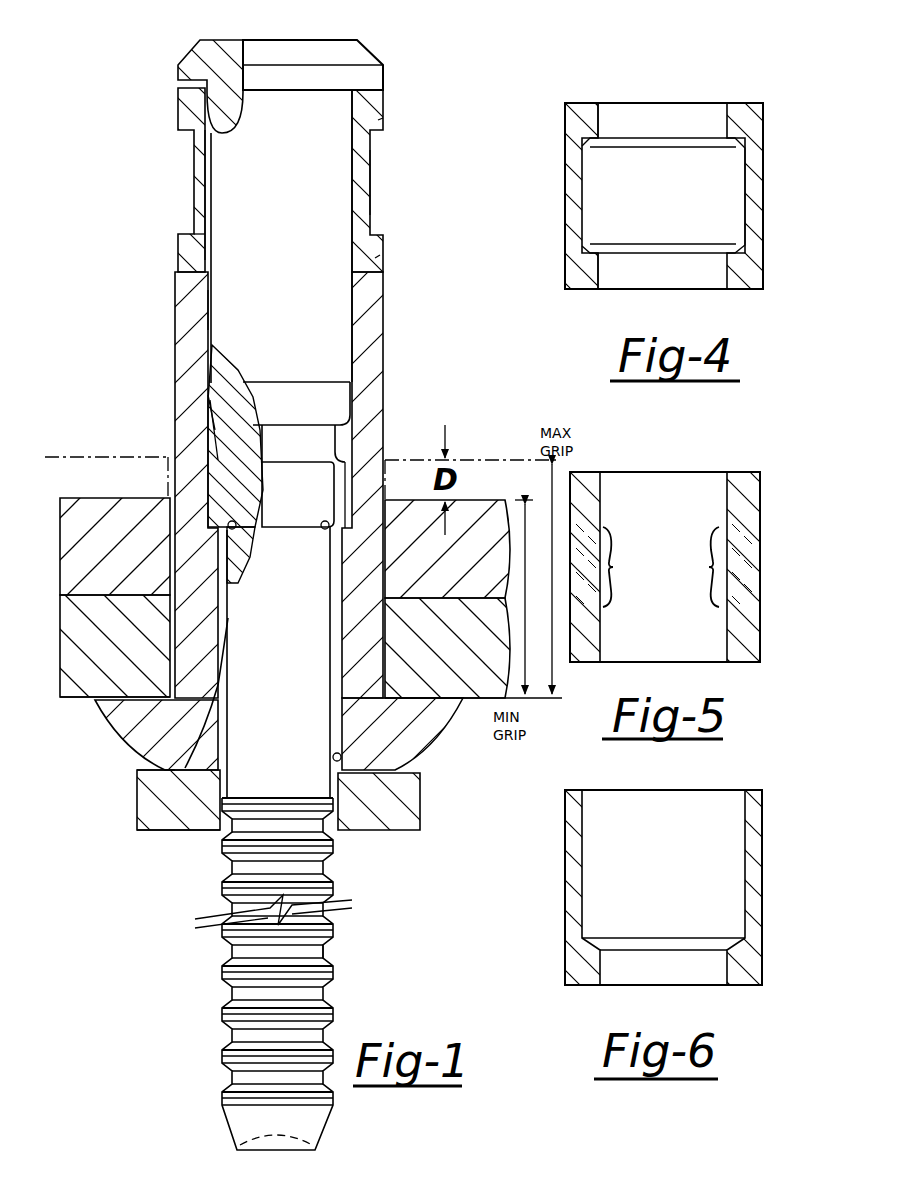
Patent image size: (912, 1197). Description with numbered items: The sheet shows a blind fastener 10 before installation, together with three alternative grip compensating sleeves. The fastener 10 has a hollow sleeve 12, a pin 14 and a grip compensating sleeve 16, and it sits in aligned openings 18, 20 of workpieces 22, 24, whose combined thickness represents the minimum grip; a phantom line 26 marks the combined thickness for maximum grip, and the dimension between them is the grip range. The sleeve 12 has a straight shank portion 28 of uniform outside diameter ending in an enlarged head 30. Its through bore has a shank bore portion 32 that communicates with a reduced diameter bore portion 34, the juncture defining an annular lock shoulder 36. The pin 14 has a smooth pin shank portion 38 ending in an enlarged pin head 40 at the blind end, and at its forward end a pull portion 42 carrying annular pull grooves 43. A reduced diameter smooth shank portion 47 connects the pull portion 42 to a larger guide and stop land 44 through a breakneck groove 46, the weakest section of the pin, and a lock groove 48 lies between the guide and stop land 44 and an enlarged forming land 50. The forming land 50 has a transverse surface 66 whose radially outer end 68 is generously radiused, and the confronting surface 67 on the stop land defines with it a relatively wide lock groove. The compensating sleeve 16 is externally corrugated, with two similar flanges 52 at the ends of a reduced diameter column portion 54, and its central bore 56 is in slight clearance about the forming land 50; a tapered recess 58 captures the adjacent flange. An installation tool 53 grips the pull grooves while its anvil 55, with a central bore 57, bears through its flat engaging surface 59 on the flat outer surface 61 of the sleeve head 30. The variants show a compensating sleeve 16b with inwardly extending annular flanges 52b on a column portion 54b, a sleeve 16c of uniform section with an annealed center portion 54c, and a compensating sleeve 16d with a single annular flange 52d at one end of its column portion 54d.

In FIG. 1, the blind fastener 10 is at (150, 250).
In FIG. 1, the hollow sleeve 12 is at (175, 335).
In FIG. 1, the pin 14 is at (228, 205).
In FIG. 1, the grip compensating sleeve 16 is at (190, 145).
In FIG. 1, the opening 18 is at (175, 620).
In FIG. 1, the opening 20 is at (150, 520).
In FIG. 1, the workpiece 22 is at (90, 690).
In FIG. 1, the workpiece 24 is at (72, 500).
In FIG. 1, the phantom line 26 is at (465, 460).
In FIG. 1, the shank portion 28 is at (372, 372).
In FIG. 1, the sleeve head 30 is at (448, 750).
In FIG. 1, the shank bore portion 32 is at (205, 305).
In FIG. 1, the reduced diameter bore portion 34 is at (222, 615).
In FIG. 1, the lock shoulder 36 is at (222, 458).
In FIG. 1, the pin shank portion 38 is at (335, 120).
In FIG. 1, the pin head 40 is at (300, 45).
In FIG. 1, the pull portion 42 is at (222, 950).
In FIG. 1, the pull grooves 43 is at (326, 992).
In FIG. 1, the guide and stop land 44 is at (310, 510).
In FIG. 1, the breakneck groove 46 is at (238, 530).
In FIG. 1, the reduced diameter smooth shank portion 47 is at (290, 707).
In FIG. 1, the lock groove 48 is at (338, 445).
In FIG. 1, the forming land 50 is at (310, 420).
In FIG. 1, the flange 52 is at (384, 118).
In FIG. 1, the installation tool 53 is at (160, 790).
In FIG. 1, the column portion 54 is at (370, 185).
In FIG. 1, the anvil 55 is at (150, 770).
In FIG. 1, the central bore 56 is at (205, 242).
In FIG. 1, the anvil bore 57 is at (330, 790).
In FIG. 1, the tapered recess 58 is at (178, 90).
In FIG. 1, the engaging surface 59 is at (210, 655).
In FIG. 1, the outer surface 61 is at (176, 825).
In FIG. 1, the surface 66 is at (238, 385).
In FIG. 1, the confronting surface 67 is at (262, 440).
In FIG. 1, the radially outer end 68 is at (212, 425).
In FIG. 4, the compensating sleeve 16b is at (805, 78).
In FIG. 4, the annular flange 52b is at (608, 118).
In FIG. 4, the column portion 54b is at (585, 203).
In FIG. 5, the sleeve 16c is at (805, 452).
In FIG. 5, the center portion 54c is at (709, 567).
In FIG. 6, the compensating sleeve 16d is at (770, 820).
In FIG. 6, the annular flange 52d is at (598, 968).
In FIG. 6, the column portion 54d is at (585, 855).